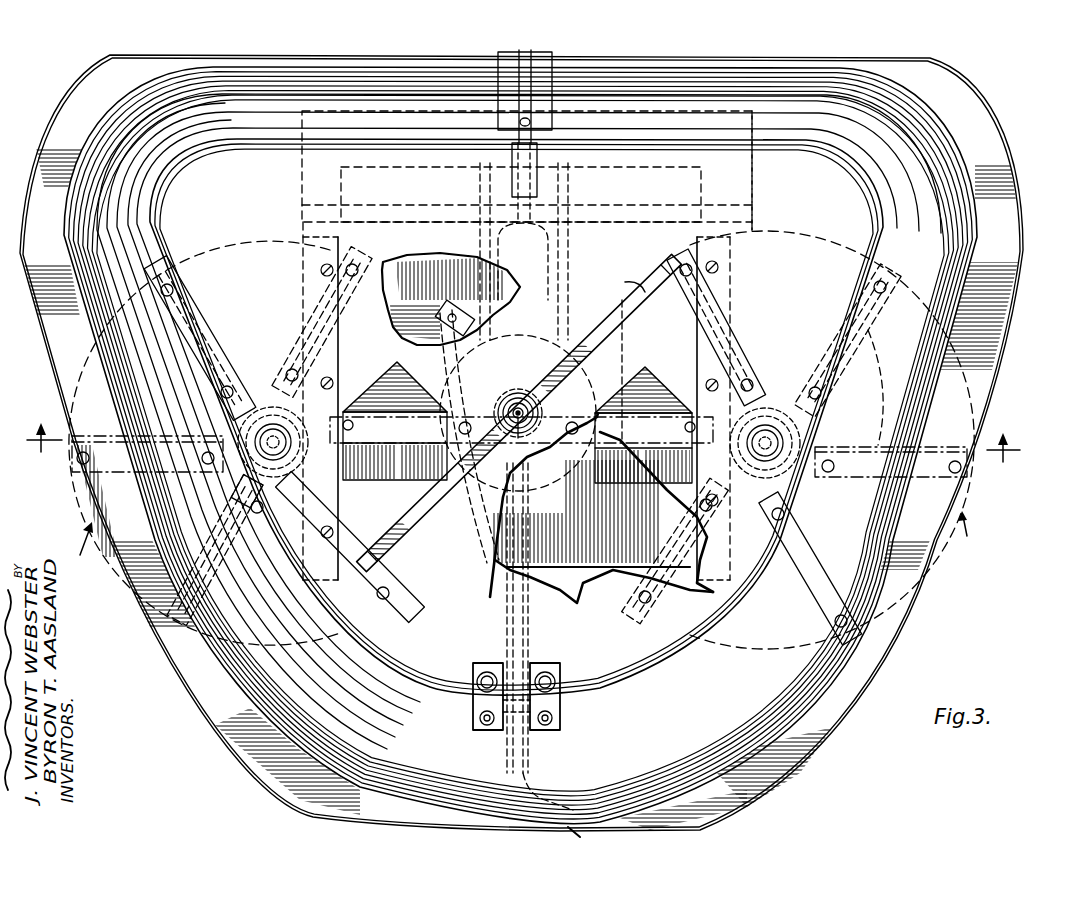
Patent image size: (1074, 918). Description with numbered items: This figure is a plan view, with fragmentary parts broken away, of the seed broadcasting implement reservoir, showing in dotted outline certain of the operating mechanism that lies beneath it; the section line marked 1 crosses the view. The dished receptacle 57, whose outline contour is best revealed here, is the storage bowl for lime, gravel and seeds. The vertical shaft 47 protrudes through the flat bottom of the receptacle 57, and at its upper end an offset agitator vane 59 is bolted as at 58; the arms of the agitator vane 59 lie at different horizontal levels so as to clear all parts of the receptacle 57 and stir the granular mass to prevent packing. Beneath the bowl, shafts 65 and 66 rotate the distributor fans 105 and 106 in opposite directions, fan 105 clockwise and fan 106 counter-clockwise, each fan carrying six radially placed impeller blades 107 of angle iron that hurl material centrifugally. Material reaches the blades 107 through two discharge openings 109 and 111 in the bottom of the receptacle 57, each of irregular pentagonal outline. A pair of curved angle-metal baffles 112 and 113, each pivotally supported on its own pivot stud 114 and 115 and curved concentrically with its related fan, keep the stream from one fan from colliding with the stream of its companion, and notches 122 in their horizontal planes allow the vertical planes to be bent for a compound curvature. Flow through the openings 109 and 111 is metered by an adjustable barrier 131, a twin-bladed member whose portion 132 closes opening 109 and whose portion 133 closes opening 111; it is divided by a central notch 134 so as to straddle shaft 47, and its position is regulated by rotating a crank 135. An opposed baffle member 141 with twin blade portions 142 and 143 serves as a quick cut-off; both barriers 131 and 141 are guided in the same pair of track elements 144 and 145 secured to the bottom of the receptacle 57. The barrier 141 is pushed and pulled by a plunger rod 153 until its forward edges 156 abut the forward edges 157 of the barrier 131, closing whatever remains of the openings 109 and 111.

The section line 1- 1 is at (523, 456).
The vertical shaft 47 is at (518, 392).
The dished receptacle 57 is at (810, 673).
The bolt 58 is at (517, 435).
The offset agitator vane 59 is at (405, 558).
The shaft 65 is at (274, 462).
The shaft 66 is at (800, 442).
The distributor fan 105 is at (76, 500).
The distributor fan 106 is at (935, 548).
The impeller blades 107 is at (995, 432).
The discharge opening 109 is at (648, 388).
The discharge opening 111 is at (375, 388).
The curved baffle 112 is at (521, 613).
The curved baffle 113 is at (620, 327).
The pivot stud 114 is at (452, 398).
The pivot stud 115 is at (570, 262).
The notches 122 is at (470, 492).
The adjustable barrier 131 is at (588, 592).
The barrier blade portion 132 is at (655, 468).
The barrier blade portion 133 is at (368, 466).
The central notch 134 is at (560, 505).
The crank 135 is at (560, 805).
The opposed baffle member 141 is at (705, 189).
The twin blade portion 142 is at (572, 292).
The twin blade portion 143 is at (485, 312).
The track element 144 is at (300, 307).
The track element 145 is at (708, 233).
The plunger rod 153 is at (540, 110).
The forward edges 156 is at (640, 287).
The forward edges 157 is at (410, 465).